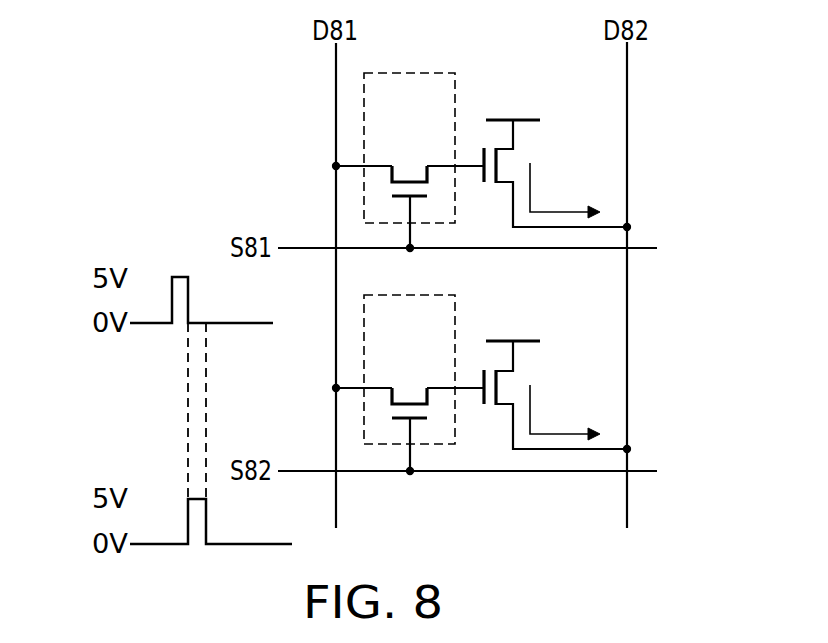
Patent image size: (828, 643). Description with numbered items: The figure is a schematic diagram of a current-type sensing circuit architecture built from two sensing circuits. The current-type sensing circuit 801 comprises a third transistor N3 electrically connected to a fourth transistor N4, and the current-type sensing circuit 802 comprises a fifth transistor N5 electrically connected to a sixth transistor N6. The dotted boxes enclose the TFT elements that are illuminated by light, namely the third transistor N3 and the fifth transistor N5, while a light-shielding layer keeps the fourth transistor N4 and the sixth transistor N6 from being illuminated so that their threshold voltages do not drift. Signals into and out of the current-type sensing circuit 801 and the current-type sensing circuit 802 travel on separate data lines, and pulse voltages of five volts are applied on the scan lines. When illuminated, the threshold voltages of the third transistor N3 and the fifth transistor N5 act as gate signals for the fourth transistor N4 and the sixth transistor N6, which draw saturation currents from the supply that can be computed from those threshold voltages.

The current-type sensing circuit 801 is at (562, 113).
The current-type sensing circuit 802 is at (562, 335).
The third transistor N3 is at (408, 165).
The fourth transistor N4 is at (512, 157).
The fifth transistor N5 is at (408, 387).
The sixth transistor N6 is at (512, 379).